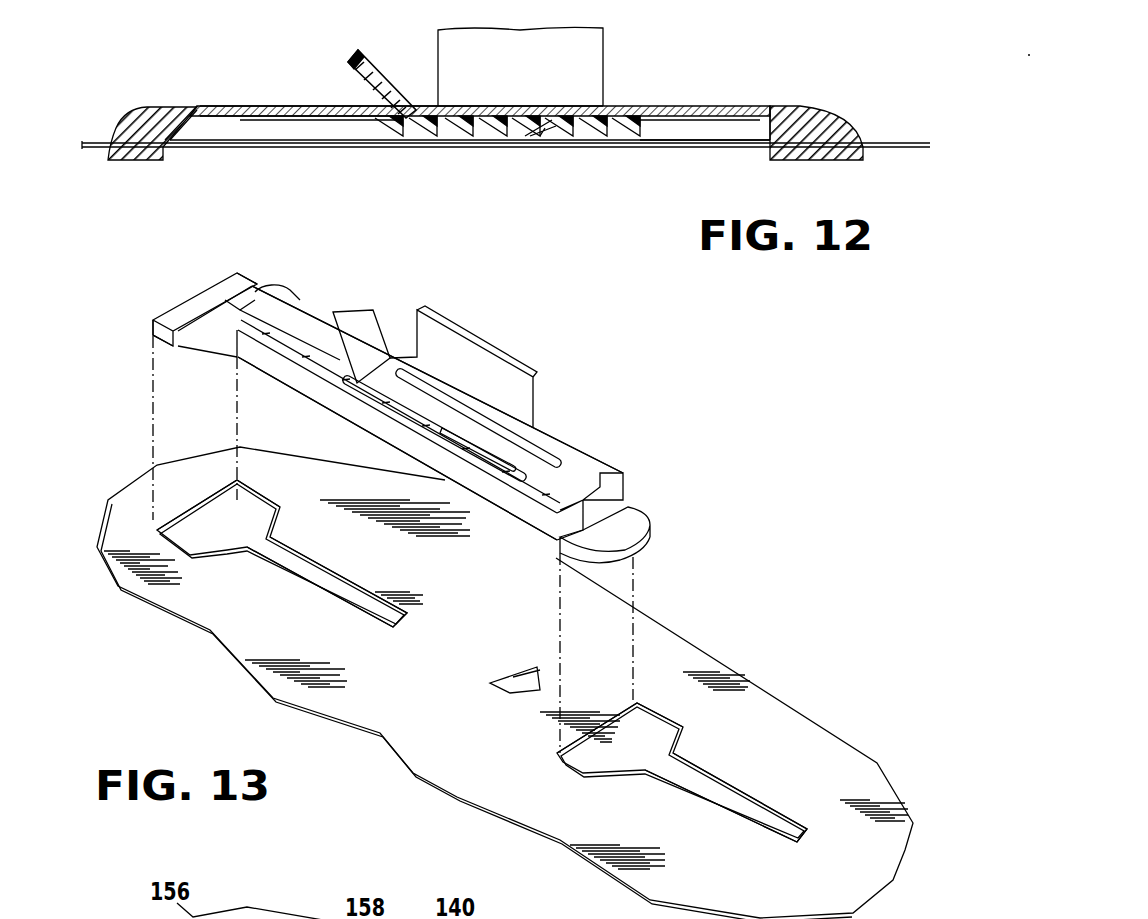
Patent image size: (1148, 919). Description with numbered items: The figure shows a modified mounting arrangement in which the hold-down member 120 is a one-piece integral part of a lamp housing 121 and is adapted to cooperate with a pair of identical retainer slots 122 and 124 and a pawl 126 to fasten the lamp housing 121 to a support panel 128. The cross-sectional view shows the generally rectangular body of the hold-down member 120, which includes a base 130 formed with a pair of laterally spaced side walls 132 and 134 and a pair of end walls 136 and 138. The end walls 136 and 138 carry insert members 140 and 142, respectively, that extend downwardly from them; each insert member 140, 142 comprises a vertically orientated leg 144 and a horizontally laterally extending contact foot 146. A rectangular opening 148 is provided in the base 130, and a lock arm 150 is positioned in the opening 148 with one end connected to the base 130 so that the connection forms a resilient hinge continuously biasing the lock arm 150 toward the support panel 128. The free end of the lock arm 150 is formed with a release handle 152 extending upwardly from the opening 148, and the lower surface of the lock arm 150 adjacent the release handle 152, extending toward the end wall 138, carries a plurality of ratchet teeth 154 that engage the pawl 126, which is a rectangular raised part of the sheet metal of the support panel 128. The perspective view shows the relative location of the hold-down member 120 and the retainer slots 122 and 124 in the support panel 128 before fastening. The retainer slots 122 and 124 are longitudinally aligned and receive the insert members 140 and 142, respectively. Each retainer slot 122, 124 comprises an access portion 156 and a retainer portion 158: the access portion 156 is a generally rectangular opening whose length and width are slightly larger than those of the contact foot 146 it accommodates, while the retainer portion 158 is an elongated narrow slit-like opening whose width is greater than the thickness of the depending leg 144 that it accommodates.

In FIG. 12, the hold-down member 120 is at (689, 95).
In FIG. 13, the hold-down member 120 is at (572, 428).
In FIG. 12, the lamp housing 121 is at (585, 60).
In FIG. 13, the lamp housing 121 is at (507, 392).
In FIG. 12, the retainer slot 122 is at (331, 124).
In FIG. 13, the retainer slot 122 is at (195, 535).
In FIG. 12, the retainer slot 124 is at (697, 158).
In FIG. 13, the retainer slot 124 is at (600, 757).
In FIG. 12, the pawl 126 is at (545, 136).
In FIG. 13, the pawl 126 is at (523, 670).
In FIG. 12, the support panel 128 is at (894, 132).
In FIG. 13, the support panel 128 is at (780, 705).
In FIG. 12, the base 130 is at (764, 96).
In FIG. 13, the base 130 is at (588, 466).
In FIG. 13, the side wall 132 is at (497, 490).
In FIG. 12, the side wall 134 is at (264, 140).
In FIG. 13, the side wall 134 is at (623, 473).
In FIG. 12, the end wall 136 is at (212, 143).
In FIG. 13, the end wall 136 is at (290, 295).
In FIG. 12, the end wall 138 is at (767, 128).
In FIG. 13, the end wall 138 is at (630, 485).
In FIG. 12, the insert member 140 is at (127, 100).
In FIG. 13, the insert member 140 is at (176, 294).
In FIG. 12, the insert member 142 is at (848, 108).
In FIG. 13, the insert member 142 is at (660, 548).
In FIG. 13, the leg 144 is at (243, 282).
In FIG. 13, the contact foot 146 is at (183, 317).
In FIG. 12, the rectangular opening 148 is at (290, 104).
In FIG. 13, the rectangular opening 148 is at (336, 318).
In FIG. 12, the lock arm 150 is at (500, 96).
In FIG. 13, the lock arm 150 is at (430, 382).
In FIG. 12, the release handle 152 is at (374, 60).
In FIG. 13, the release handle 152 is at (417, 303).
In FIG. 12, the ratchet teeth 154 is at (468, 140).
In FIG. 13, the ratchet teeth 154 is at (403, 400).
In FIG. 13, the access portion 156 is at (217, 520).
In FIG. 13, the retainer portion 158 is at (337, 587).